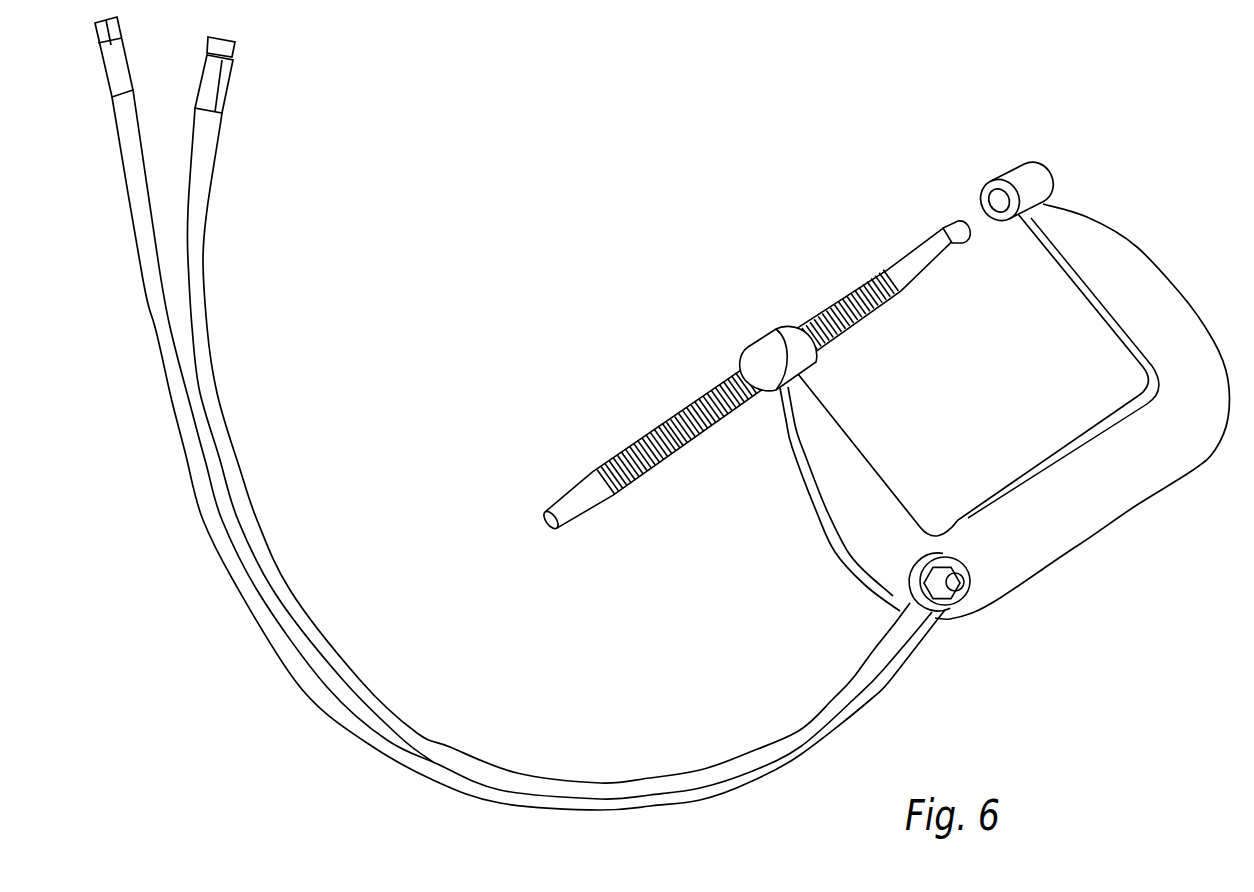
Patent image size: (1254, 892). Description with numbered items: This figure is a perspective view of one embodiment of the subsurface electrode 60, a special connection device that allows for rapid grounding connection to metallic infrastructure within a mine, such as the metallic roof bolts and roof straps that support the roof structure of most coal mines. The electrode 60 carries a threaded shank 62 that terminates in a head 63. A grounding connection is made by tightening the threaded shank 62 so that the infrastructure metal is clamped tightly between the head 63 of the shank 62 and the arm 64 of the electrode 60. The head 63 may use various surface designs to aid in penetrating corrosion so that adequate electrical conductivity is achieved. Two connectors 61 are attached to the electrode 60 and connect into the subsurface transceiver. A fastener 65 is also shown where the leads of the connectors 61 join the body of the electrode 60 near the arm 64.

The clamp assembly 60 is at (580, 145).
The tubes with connectors 61 is at (103, 72).
The threaded screw 62 is at (817, 313).
The screw tip 63 is at (948, 230).
The C-shaped frame 64 is at (1102, 243).
The pivot bolt 65 is at (955, 582).